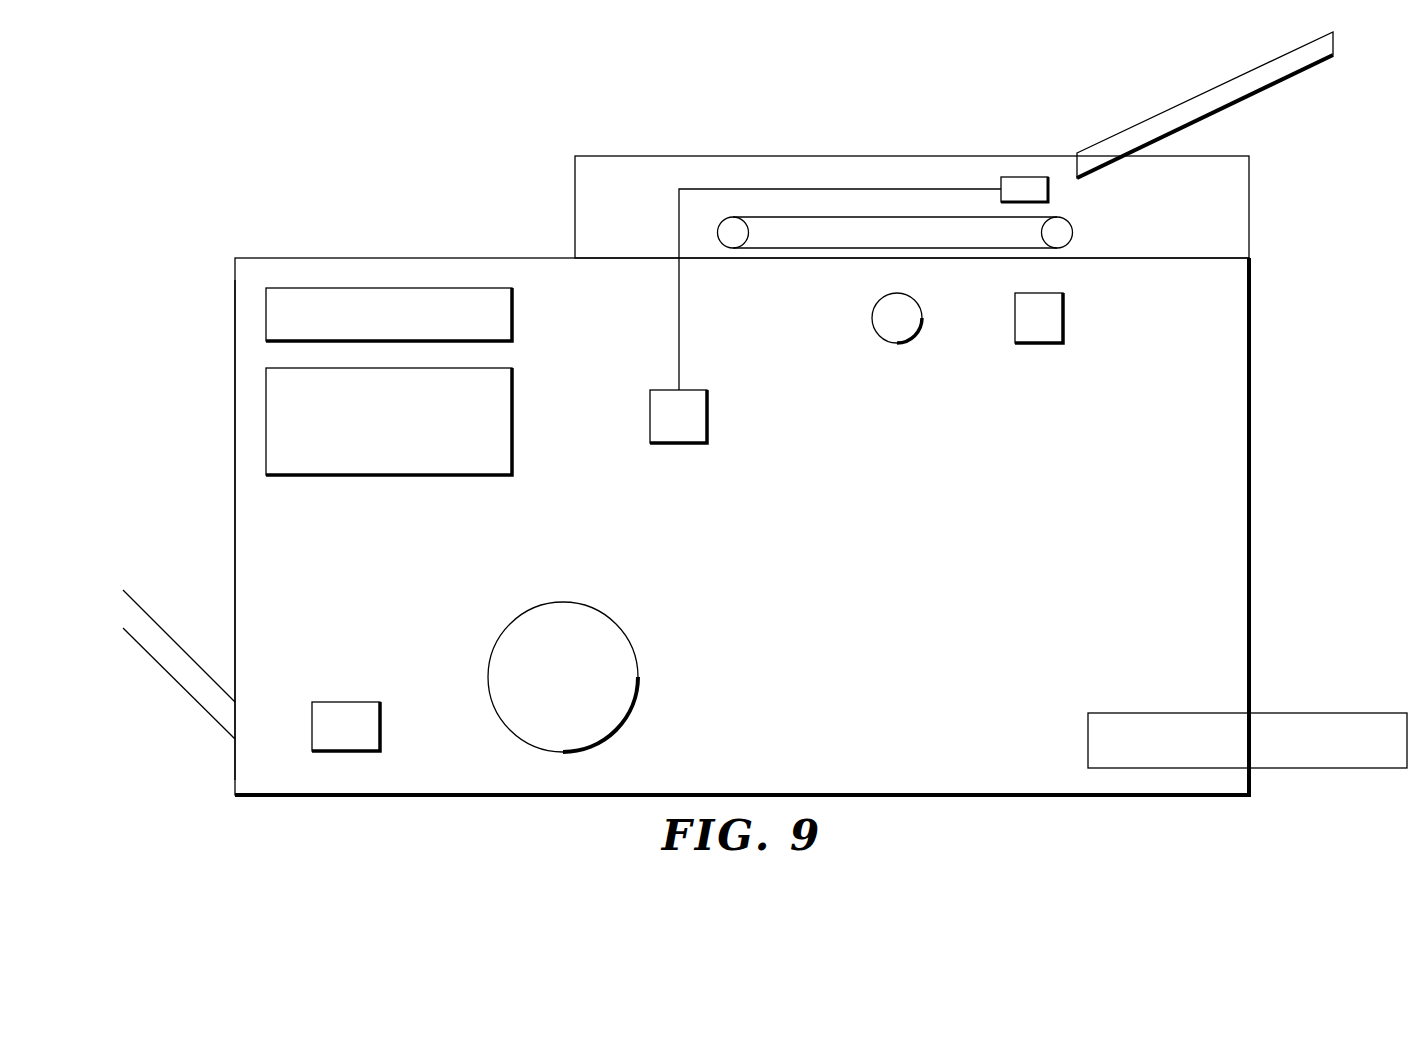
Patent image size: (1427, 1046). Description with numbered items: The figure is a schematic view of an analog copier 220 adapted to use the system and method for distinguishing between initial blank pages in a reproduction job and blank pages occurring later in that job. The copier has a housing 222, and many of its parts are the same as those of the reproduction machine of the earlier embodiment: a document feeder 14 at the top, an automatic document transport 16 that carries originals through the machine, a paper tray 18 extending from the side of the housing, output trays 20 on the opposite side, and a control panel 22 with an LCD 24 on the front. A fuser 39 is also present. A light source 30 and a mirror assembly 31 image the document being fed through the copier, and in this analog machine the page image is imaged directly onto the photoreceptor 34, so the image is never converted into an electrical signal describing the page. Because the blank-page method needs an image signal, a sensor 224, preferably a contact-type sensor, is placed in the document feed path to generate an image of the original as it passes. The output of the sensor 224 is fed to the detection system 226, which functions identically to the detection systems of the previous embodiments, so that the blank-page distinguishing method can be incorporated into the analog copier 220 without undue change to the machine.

The analog copier 220 is at (333, 230).
The housing 222 is at (235, 350).
The document feeder 14 is at (1285, 65).
The sensor 224 is at (1018, 181).
The automatic document transport 16 is at (985, 245).
The LCD 24 is at (505, 313).
The control panel 22 is at (505, 420).
The detection system 226 is at (680, 430).
The light source 30 is at (900, 335).
The mirror assembly 31 is at (1041, 340).
The photoreceptor 34 is at (528, 617).
The fuser 39 is at (332, 707).
The output trays 20 is at (150, 620).
The paper tray 18 is at (1353, 722).